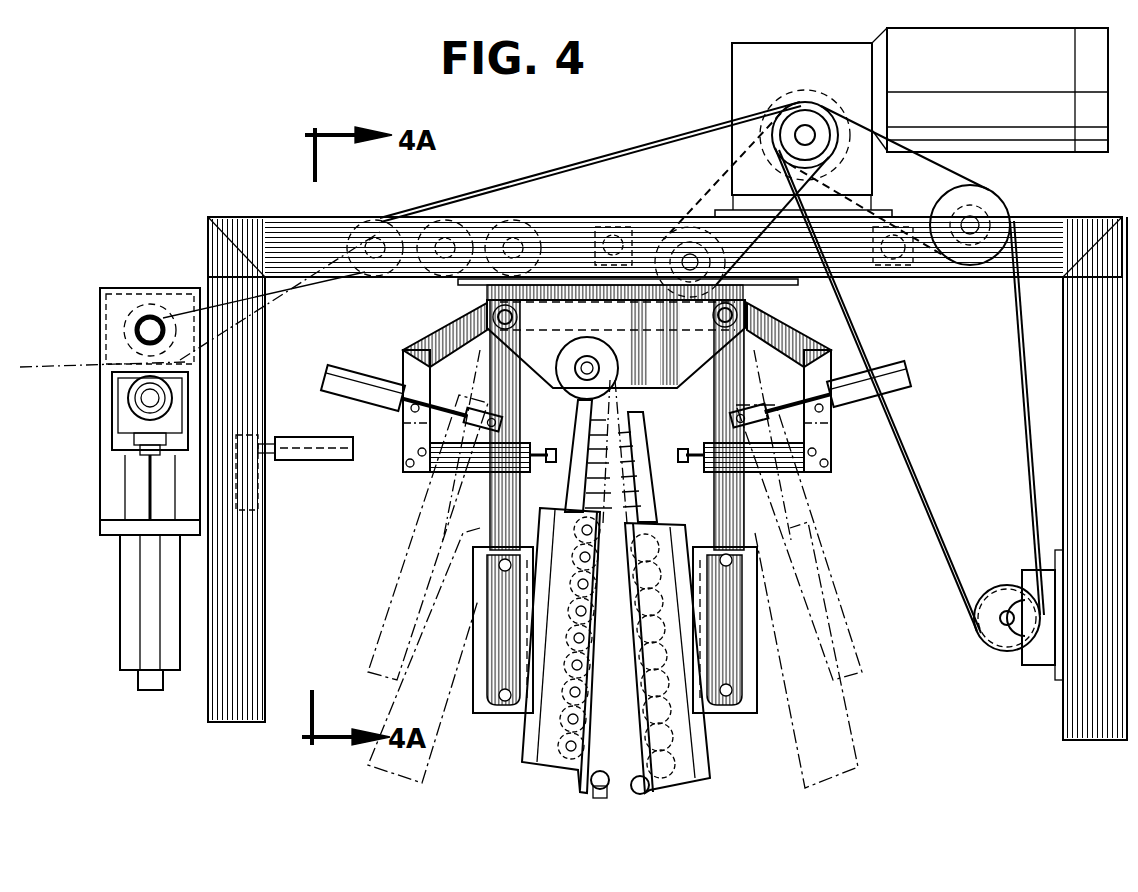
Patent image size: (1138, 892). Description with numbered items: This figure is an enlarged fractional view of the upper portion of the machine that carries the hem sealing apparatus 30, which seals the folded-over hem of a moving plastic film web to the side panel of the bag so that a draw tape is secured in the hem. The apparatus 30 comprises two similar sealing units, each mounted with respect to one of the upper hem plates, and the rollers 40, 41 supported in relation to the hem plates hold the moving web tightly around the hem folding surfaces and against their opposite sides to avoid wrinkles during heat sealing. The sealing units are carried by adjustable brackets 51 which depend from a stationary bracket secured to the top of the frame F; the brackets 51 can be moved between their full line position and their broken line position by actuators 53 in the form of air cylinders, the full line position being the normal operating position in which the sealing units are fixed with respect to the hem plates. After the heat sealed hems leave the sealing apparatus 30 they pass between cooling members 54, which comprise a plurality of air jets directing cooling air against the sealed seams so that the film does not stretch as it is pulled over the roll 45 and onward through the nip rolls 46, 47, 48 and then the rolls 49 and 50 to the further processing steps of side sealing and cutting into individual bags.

The hem sealing apparatus 30 is at (514, 748).
The roller 40 is at (615, 780).
The roller 41 is at (635, 780).
The roll 45 is at (575, 386).
The nip roll 46 is at (504, 222).
The nip roll 47 is at (427, 216).
The nip roll 48 is at (360, 216).
The roll 49 is at (150, 325).
The roll 50 is at (125, 385).
The adjustable bracket 51 is at (415, 540).
The actuator 53 is at (345, 382).
The cooling member 54 is at (578, 425).
The frame F is at (570, 228).